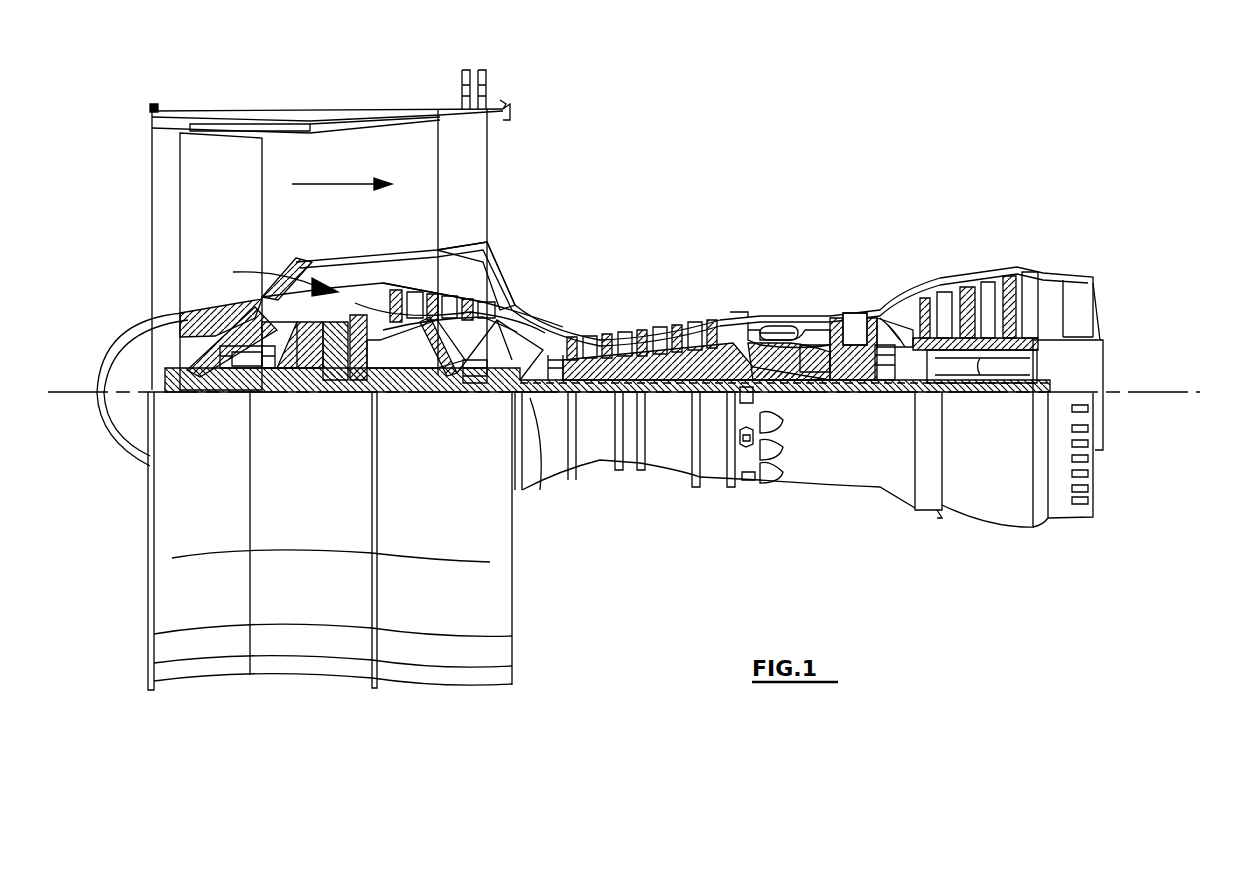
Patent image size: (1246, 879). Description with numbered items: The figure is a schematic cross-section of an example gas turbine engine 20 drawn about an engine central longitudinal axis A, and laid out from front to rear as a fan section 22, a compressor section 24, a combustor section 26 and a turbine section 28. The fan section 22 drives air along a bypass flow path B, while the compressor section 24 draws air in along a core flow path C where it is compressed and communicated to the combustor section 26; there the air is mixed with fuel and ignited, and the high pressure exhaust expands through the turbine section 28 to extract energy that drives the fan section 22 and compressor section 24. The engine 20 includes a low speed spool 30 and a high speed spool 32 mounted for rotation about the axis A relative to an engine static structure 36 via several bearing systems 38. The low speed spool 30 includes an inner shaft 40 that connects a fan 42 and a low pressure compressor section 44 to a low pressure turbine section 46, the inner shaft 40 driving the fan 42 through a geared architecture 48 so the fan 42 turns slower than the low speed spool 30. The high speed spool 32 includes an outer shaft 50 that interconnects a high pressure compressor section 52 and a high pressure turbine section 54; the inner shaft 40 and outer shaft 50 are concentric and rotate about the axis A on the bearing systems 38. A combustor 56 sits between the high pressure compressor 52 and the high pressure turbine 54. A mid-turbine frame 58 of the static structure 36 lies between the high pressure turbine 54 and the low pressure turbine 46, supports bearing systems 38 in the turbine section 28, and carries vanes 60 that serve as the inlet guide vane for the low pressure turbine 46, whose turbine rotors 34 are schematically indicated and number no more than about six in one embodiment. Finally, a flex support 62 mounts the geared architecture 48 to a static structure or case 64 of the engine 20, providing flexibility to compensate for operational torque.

The gas turbine engine 20 is at (797, 158).
The fan section 22 is at (358, 82).
The compressor section 24 is at (372, 224).
The combustor section 26 is at (825, 224).
The turbine section 28 is at (1047, 224).
The low speed spool 30 is at (669, 403).
The high speed spool 32 is at (713, 340).
The turbine rotors 34 is at (985, 384).
The engine static structure 36 is at (711, 483).
The bearing systems 38 is at (228, 372).
The inner shaft 40 is at (528, 398).
The fan 42 is at (233, 237).
The low pressure compressor section 44 is at (493, 252).
The low pressure turbine section 46 is at (978, 285).
The geared architecture 48 is at (335, 374).
The outer shaft 50 is at (790, 386).
The high pressure compressor section 52 is at (643, 362).
The high pressure turbine section 54 is at (852, 315).
The combustor 56 is at (785, 336).
The mid-turbine frame 58 is at (895, 293).
The vanes 60 is at (932, 384).
The flex support 62 is at (365, 333).
The static structure or case 64 is at (360, 302).
The engine central longitudinal axis A is at (1189, 392).
The bypass flow path B is at (335, 184).
The core flow path C is at (275, 278).